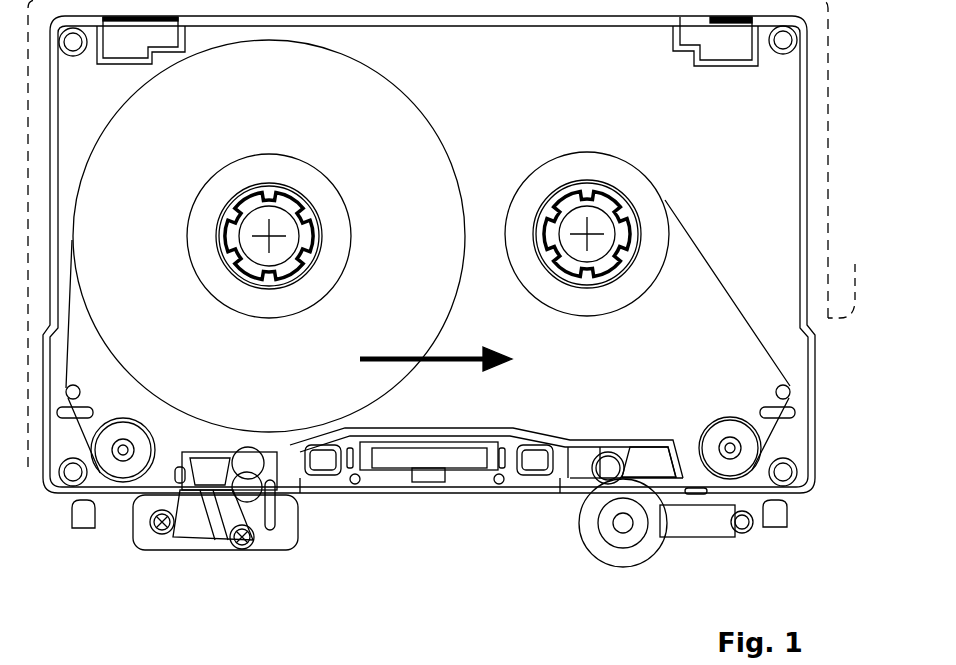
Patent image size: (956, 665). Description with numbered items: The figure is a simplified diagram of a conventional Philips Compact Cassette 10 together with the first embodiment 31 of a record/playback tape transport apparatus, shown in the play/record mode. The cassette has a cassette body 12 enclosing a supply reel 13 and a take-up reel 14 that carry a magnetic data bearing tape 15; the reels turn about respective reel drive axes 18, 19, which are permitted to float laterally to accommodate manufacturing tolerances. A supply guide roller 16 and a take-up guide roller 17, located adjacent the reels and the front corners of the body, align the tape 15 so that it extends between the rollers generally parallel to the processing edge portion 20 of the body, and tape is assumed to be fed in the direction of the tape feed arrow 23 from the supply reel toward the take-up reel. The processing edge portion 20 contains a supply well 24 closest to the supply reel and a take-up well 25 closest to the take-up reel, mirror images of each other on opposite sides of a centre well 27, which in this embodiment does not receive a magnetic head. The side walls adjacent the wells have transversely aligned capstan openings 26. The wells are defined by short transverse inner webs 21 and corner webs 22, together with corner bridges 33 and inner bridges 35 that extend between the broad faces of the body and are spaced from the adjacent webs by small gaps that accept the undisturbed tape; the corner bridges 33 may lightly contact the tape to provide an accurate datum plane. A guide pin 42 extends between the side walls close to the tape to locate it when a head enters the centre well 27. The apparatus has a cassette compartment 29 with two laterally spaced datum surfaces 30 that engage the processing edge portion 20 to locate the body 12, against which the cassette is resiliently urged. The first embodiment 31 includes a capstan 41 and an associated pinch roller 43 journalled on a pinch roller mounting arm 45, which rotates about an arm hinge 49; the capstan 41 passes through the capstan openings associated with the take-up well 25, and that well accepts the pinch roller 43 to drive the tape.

The Compact Cassette 10 is at (818, 64).
The cassette body 12 is at (816, 220).
The supply reel 13 is at (298, 172).
The take-up reel 14 is at (559, 178).
The magnetic data bearing tape 15 is at (738, 330).
The supply guide roller 16 is at (121, 434).
The take-up guide roller 17 is at (717, 433).
The reel drive axis 18 is at (279, 229).
The reel drive axis 19 is at (578, 228).
The processing edge portion 20 is at (490, 500).
The inner webs 21 is at (307, 495).
The corner webs 22 is at (135, 494).
The tape feed arrow 23 is at (452, 350).
The supply well 24 is at (207, 472).
The take-up well 25 is at (606, 462).
The capstan openings 26 is at (252, 458).
The centre well 27 is at (453, 460).
The cassette compartment 29 is at (849, 276).
The datum surfaces 30 is at (81, 521).
The first embodiment of the apparatus 31 is at (314, 558).
The corner bridges 33 is at (177, 480).
The inner bridges 35 is at (288, 478).
The capstan 41 is at (598, 448).
The guide pin 42 is at (360, 481).
The pinch roller 43 is at (609, 553).
The pinch roller mounting arm 45 is at (685, 526).
The arm hinge 49 is at (745, 526).